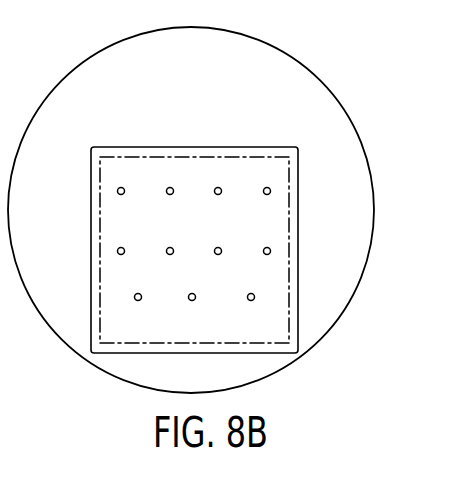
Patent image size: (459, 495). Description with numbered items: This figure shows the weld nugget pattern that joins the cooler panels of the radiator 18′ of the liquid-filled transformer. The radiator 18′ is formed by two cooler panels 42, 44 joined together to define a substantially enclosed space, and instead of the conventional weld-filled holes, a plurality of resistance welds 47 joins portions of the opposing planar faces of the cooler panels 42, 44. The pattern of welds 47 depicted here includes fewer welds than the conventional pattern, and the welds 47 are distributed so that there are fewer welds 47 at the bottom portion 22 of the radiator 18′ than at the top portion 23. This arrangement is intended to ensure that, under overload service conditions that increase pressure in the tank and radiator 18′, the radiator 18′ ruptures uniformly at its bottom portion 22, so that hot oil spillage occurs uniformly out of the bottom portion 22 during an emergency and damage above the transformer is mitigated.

The radiator 18′ is at (88, 333).
The bottom portion 22 is at (108, 338).
The top portion 23 is at (152, 158).
The cooler panel 42 is at (298, 195).
The cooler panel 44 is at (106, 178).
The resistance welds 47 is at (222, 252).